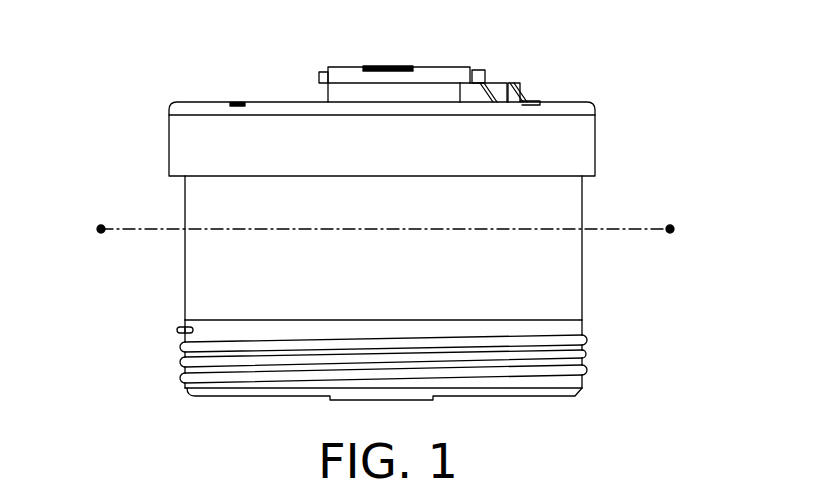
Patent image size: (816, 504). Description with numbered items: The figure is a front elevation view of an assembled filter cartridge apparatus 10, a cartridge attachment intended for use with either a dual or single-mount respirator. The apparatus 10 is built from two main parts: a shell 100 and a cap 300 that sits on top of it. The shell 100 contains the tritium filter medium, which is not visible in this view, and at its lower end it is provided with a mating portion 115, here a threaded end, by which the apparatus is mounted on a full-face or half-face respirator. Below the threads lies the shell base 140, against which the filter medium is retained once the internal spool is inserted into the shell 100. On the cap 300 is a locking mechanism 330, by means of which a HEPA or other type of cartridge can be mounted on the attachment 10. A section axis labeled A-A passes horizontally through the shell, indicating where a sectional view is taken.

The filter cartridge apparatus 10 is at (112, 80).
The shell 100 is at (207, 280).
The mating portion 115 is at (178, 381).
The shell base 140 is at (213, 394).
The cap 300 is at (569, 144).
The locking mechanism 330 is at (415, 87).